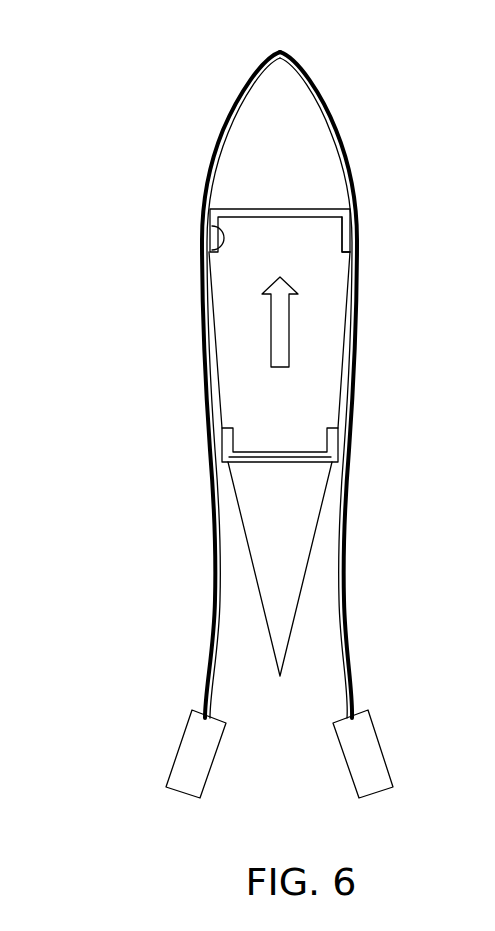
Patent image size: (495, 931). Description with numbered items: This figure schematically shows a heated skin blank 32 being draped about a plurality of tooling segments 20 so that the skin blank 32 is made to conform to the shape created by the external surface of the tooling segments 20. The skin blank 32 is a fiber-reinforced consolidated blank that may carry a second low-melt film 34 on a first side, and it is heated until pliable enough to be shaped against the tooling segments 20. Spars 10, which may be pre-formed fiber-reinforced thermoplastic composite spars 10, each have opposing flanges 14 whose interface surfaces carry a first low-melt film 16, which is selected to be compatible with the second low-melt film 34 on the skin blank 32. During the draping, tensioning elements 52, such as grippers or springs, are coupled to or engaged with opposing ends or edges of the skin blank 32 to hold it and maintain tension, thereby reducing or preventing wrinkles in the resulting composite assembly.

The spar 10 is at (252, 207).
The flange 14 is at (341, 233).
The first low-melt film 16 is at (204, 243).
The tooling segment 20 is at (257, 123).
The skin blank 32 is at (208, 453).
The second low-melt film 34 is at (350, 163).
The tensioning element 52 is at (182, 790).